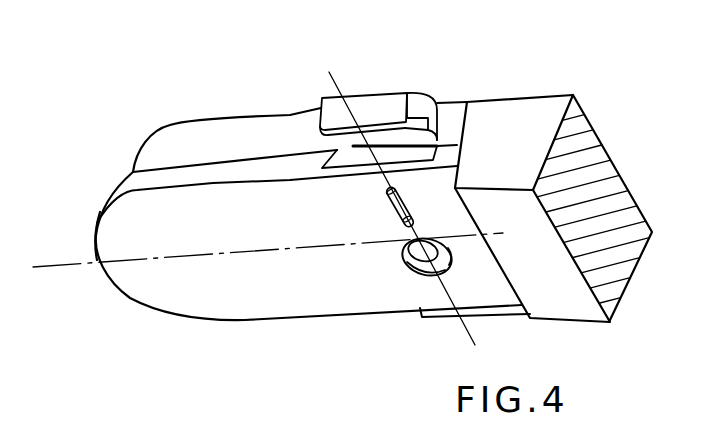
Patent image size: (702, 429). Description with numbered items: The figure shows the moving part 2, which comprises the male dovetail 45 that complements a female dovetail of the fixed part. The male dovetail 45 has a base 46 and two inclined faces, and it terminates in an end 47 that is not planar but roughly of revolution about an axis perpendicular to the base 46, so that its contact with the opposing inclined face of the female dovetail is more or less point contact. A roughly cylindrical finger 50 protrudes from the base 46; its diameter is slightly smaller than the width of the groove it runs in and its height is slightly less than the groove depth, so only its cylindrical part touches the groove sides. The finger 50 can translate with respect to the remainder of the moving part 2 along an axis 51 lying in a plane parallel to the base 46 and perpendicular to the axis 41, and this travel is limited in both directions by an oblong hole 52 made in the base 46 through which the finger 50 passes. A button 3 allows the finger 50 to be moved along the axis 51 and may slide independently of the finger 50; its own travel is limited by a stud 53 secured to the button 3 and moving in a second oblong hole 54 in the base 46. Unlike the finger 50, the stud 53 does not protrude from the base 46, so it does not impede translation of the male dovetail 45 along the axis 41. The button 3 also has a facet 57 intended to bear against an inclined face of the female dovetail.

The moving part 2 is at (537, 95).
The button 3 is at (380, 92).
The axis 41 is at (57, 262).
The male dovetail 45 is at (232, 172).
The base 46 is at (257, 282).
The end 47 is at (100, 272).
The finger 50 is at (407, 271).
The axis 51 is at (327, 80).
The oblong hole 52 is at (451, 261).
The stud 53 is at (386, 192).
The oblong hole 54 is at (393, 216).
The facet 57 is at (413, 157).